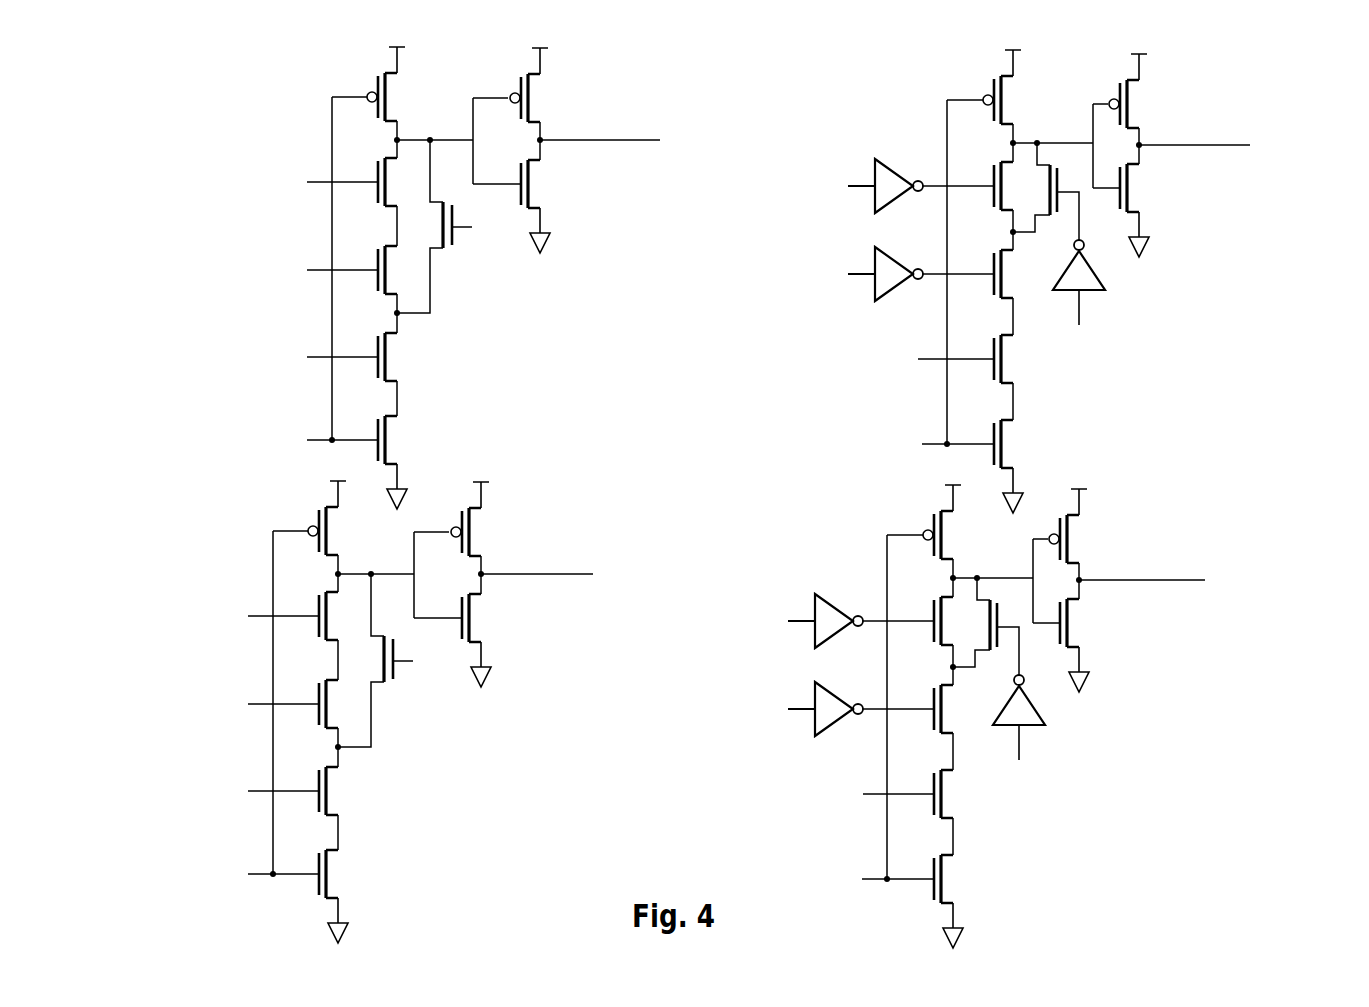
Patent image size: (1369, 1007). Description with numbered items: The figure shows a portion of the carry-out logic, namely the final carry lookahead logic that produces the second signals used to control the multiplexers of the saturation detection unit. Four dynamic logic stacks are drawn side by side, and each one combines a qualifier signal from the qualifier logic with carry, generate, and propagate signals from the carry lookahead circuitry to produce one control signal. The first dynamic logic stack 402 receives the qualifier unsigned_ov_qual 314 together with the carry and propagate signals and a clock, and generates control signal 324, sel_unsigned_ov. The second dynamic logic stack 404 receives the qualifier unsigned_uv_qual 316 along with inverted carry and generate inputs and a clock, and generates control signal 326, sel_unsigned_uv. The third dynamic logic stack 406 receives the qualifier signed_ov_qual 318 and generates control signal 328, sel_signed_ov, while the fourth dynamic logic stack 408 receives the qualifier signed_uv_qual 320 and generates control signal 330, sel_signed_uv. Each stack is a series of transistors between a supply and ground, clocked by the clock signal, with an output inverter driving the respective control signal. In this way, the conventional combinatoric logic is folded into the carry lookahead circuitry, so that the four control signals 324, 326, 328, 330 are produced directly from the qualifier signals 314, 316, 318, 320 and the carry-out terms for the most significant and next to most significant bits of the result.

The unsigned_ov_qual qualifier signal 314 is at (311, 357).
The unsigned_uv_qual qualifier signal 316 is at (923, 359).
The signed_ov_qual qualifier signal 318 is at (199, 790).
The signed_uv_qual qualifier signal 320 is at (813, 793).
The control signal (sel_unsigned_ov) 324 is at (641, 142).
The control signal (sel_unsigned_uv) 326 is at (1248, 147).
The control signal (sel_signed_ov) 328 is at (576, 576).
The control signal (sel_signed_uv) 330 is at (1183, 582).
The dynamic logic stack 402 is at (427, 278).
The dynamic logic stack 404 is at (1032, 281).
The dynamic logic stack 406 is at (376, 712).
The dynamic logic stack 408 is at (990, 716).